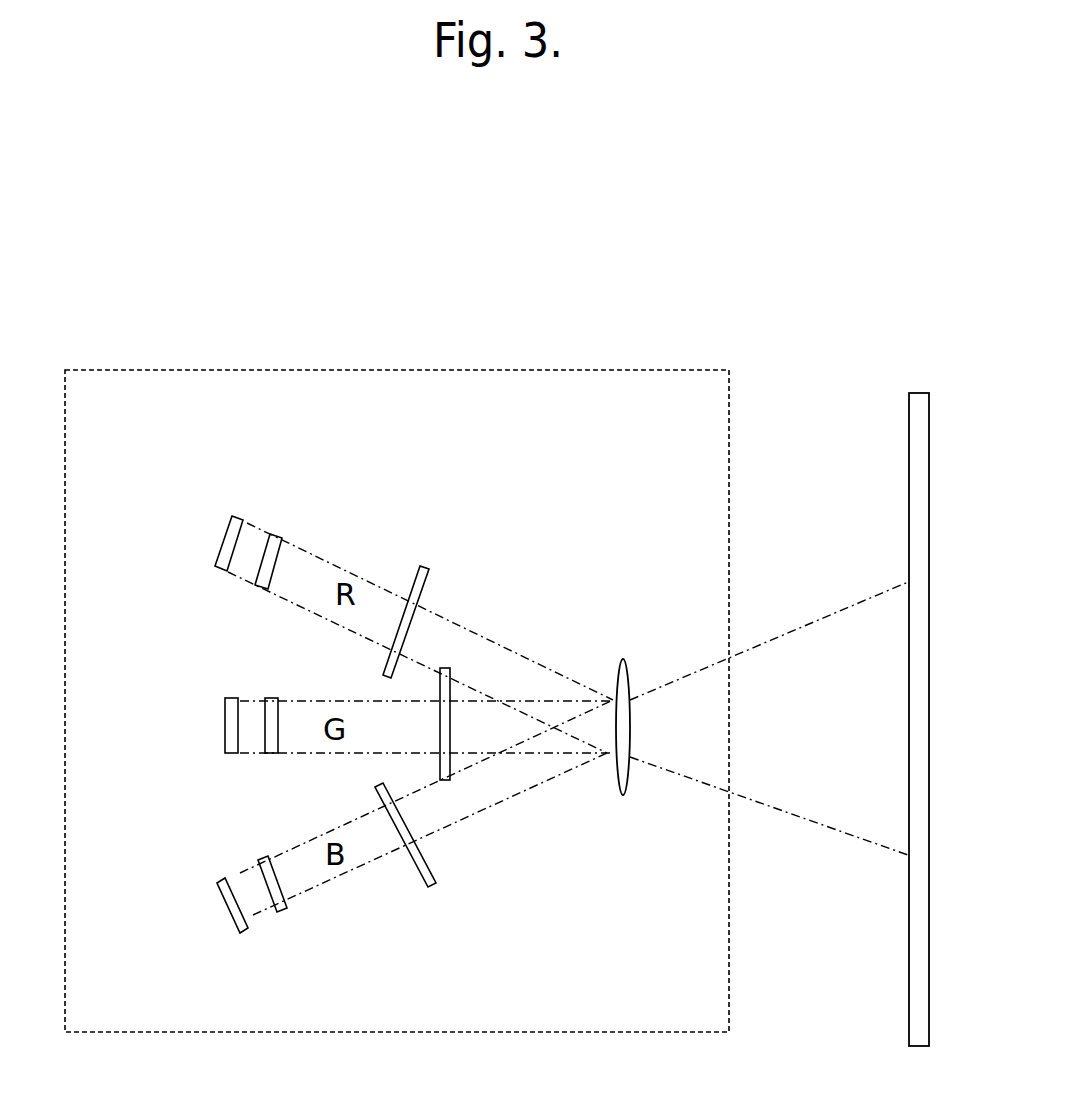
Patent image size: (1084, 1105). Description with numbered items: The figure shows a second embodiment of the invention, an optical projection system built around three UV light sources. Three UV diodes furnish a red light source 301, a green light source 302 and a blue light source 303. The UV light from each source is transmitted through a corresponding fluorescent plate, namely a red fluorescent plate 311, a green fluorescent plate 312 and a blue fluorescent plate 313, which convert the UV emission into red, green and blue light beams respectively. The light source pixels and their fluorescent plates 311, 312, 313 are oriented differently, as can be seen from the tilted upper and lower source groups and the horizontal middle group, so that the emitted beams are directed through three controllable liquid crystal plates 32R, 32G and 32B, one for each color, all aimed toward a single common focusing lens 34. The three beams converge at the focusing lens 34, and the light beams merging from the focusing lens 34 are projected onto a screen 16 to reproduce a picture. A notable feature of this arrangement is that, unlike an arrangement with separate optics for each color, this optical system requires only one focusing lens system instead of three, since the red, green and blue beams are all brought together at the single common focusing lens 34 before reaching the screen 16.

The screen 16 is at (908, 428).
The red light source 301 is at (222, 540).
The green light source 302 is at (217, 728).
The blue light source 303 is at (223, 908).
The red fluorescent plate 311 is at (275, 537).
The green fluorescent plate 312 is at (263, 697).
The blue fluorescent plate 313 is at (260, 863).
The controllable liquid crystal plate 32R is at (413, 567).
The controllable liquid crystal plate 32G is at (453, 765).
The controllable liquid crystal plate 32B is at (415, 888).
The common focusing lens 34 is at (628, 650).